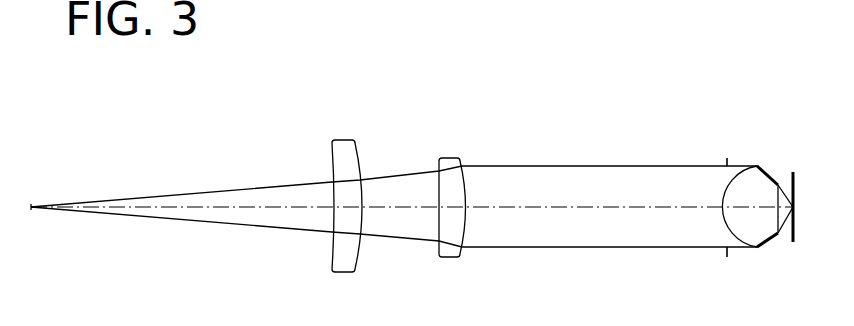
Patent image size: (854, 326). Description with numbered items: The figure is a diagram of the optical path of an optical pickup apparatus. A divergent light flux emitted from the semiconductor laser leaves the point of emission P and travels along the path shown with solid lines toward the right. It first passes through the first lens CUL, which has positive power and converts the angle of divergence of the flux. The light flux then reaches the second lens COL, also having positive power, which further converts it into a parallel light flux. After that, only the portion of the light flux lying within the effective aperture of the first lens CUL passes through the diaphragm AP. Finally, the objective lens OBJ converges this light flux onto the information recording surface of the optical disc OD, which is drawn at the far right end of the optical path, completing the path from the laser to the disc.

The point of emission P is at (31, 204).
The first lens CUL is at (345, 138).
The second lens COL is at (453, 155).
The diaphragm AP is at (727, 259).
The objective lens OBJ is at (762, 162).
The optical disc OD is at (793, 170).